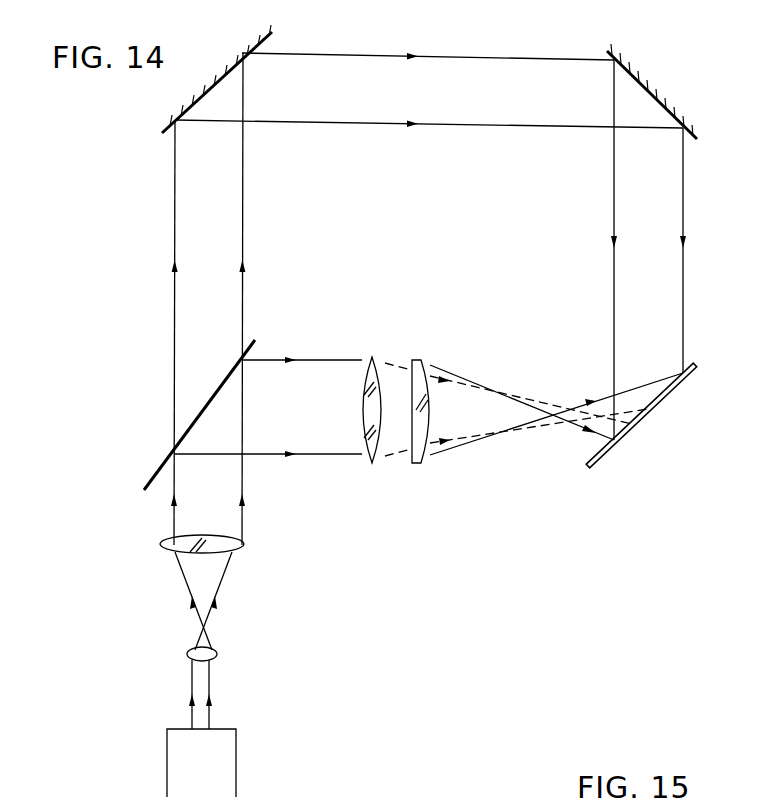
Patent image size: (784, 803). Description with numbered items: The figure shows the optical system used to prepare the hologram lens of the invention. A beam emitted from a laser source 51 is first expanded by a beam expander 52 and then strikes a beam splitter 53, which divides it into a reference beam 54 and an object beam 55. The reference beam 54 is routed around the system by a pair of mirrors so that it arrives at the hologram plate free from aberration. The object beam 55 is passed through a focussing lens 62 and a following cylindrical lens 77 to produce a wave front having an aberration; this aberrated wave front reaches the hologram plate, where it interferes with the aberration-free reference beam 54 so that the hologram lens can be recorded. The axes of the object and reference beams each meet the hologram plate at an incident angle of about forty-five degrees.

The laser source 51 is at (678, 382).
The beam expander 52 is at (248, 540).
The beam splitter 53 is at (283, 333).
The reference beam 54 is at (189, 235).
The object beam 55 is at (316, 432).
The focussing lens 62 is at (377, 451).
The plano-convex lens 77 is at (434, 441).